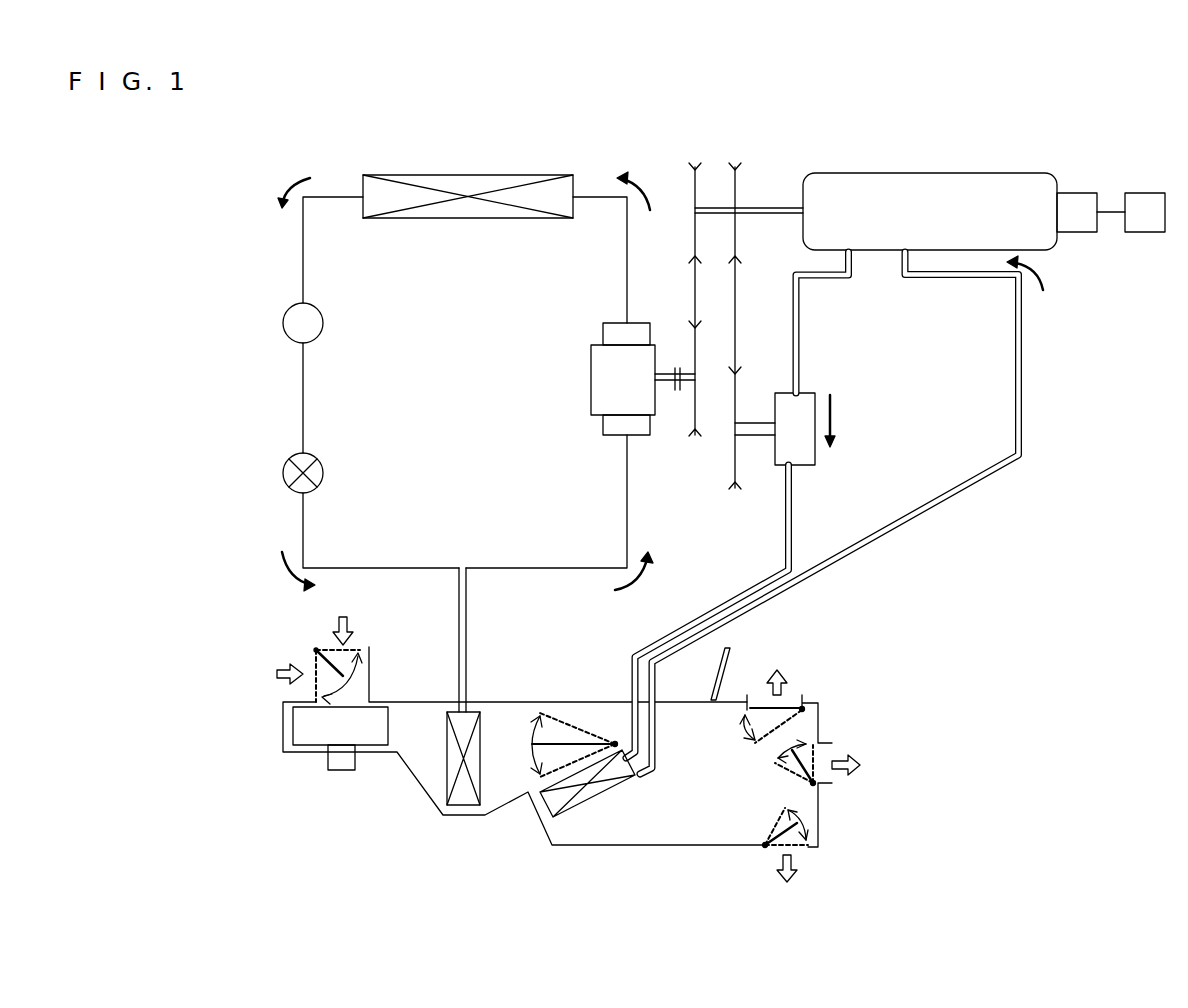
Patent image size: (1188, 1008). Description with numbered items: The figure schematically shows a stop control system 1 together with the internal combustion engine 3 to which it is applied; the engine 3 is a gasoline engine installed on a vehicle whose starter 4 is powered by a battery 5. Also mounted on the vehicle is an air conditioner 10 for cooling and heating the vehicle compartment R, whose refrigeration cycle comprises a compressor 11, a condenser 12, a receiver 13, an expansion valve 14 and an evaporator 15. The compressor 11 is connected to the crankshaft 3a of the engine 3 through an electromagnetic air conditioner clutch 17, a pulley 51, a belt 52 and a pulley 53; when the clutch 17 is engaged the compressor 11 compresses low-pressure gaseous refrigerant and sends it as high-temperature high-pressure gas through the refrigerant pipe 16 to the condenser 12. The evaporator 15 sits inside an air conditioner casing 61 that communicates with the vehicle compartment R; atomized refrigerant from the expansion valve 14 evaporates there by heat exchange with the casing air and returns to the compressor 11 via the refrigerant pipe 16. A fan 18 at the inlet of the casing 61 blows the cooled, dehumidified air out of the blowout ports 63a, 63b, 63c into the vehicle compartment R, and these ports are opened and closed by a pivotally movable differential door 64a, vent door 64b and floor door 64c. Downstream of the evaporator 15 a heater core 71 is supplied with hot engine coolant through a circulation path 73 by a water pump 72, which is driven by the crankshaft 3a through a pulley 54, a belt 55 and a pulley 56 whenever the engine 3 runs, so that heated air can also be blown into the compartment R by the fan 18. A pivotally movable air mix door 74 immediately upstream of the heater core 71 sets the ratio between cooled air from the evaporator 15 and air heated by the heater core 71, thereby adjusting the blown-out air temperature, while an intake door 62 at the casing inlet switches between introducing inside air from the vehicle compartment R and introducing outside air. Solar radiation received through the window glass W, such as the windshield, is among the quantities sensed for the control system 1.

The stop control system 1 is at (784, 128).
The internal combustion engine 3 is at (883, 173).
The crankshaft 3a is at (775, 208).
The starter 4 is at (1080, 193).
The battery 5 is at (1148, 193).
The air conditioner 10 is at (588, 162).
The compressor 11 is at (591, 372).
The condenser 12 is at (472, 175).
The receiver 13 is at (288, 307).
The expansion valve 14 is at (287, 457).
The evaporator 15 is at (447, 782).
The refrigerant pipe 16 is at (556, 568).
The electromagnetic air conditioner clutch 17 is at (680, 368).
The fan 18 is at (283, 722).
The pulley 51 is at (695, 437).
The belt 52 is at (695, 287).
The pulley 53 is at (695, 167).
The pulley 54 is at (737, 395).
The belt 55 is at (735, 305).
The pulley 56 is at (735, 167).
The air conditioner casing 61 is at (428, 702).
The intake door 62 is at (360, 652).
The blowout port 63a is at (752, 705).
The blowout port 63b is at (832, 783).
The blowout port 63c is at (800, 849).
The differential door 64a is at (800, 705).
The vent door 64b is at (815, 757).
The floor door 64c is at (780, 830).
The heater core 71 is at (592, 798).
The water pump 72 is at (812, 467).
The circulation path 73 is at (992, 465).
The air mix door 74 is at (563, 740).
The window glass W is at (708, 688).
The vehicle compartment R is at (968, 766).